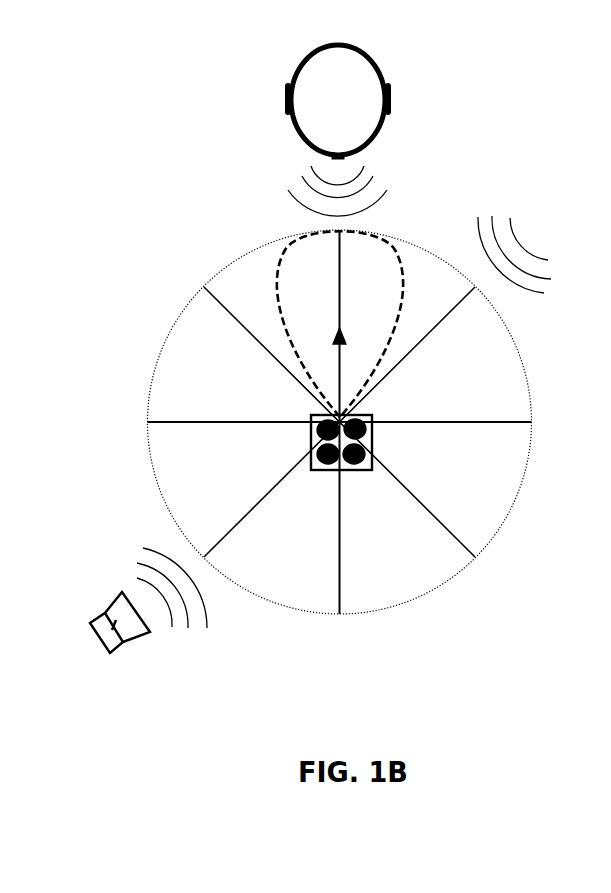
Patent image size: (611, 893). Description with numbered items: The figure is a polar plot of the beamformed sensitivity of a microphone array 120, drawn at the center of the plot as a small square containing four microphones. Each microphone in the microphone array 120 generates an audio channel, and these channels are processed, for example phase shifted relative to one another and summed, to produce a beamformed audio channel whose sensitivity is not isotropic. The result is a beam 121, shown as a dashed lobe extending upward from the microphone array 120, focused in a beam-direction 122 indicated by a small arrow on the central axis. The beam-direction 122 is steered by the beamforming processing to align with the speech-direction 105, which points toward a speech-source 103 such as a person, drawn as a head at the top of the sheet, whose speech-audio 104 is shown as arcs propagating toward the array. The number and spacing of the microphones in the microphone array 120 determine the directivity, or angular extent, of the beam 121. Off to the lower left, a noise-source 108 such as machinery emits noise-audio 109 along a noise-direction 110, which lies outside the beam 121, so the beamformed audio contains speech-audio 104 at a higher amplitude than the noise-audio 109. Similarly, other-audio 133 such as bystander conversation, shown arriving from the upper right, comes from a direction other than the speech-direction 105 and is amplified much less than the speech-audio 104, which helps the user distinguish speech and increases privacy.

The speech-source 103 is at (392, 100).
The speech-audio 104 is at (387, 196).
The speech-direction 105 is at (341, 297).
The noise-source 108 is at (93, 621).
The noise-audio 109 is at (138, 550).
The noise-direction 110 is at (226, 538).
The microphone array 120 is at (310, 416).
The beam 121 is at (394, 300).
The beam-direction 122 is at (341, 355).
The other-audio 133 is at (562, 273).